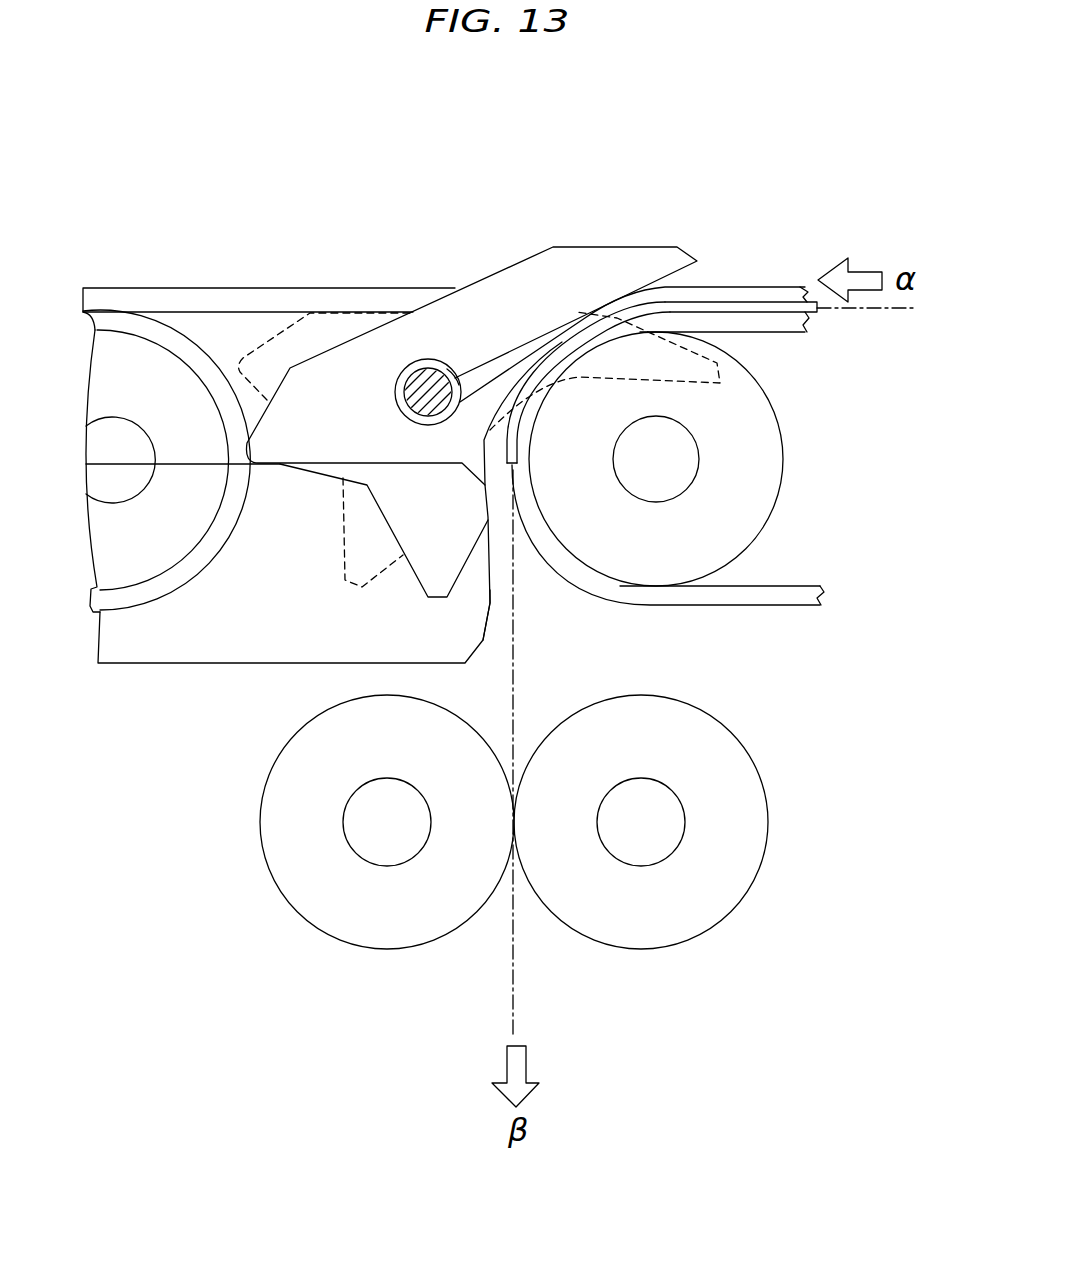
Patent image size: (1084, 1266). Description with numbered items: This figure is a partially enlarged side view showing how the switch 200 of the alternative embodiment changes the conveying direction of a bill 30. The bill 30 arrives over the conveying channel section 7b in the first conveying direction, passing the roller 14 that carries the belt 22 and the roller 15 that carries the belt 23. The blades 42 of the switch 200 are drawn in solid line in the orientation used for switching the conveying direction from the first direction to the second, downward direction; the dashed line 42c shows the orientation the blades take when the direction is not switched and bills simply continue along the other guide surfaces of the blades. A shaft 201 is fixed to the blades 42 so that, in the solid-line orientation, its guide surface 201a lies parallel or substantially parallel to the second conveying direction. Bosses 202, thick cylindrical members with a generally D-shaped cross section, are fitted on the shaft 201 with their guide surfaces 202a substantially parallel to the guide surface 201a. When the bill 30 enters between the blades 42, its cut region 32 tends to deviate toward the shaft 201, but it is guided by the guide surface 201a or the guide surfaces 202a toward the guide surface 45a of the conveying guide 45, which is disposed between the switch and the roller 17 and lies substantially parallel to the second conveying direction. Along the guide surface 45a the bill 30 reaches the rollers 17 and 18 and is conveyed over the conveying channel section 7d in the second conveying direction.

The roller 14 is at (122, 345).
The belt 22 is at (182, 343).
The conveying guide 45 is at (155, 657).
The guide surface 45a is at (493, 603).
The dashed-line orientation of the blades 42c is at (343, 555).
The switch 200 is at (523, 319).
The blades 42 is at (657, 247).
The bosses 202 is at (407, 423).
The guide surface 202a is at (478, 358).
The shaft 201 is at (413, 363).
The guide surface 201a is at (467, 365).
The region 32 is at (512, 352).
The bill 30 is at (770, 302).
The conveying channel section 7b is at (907, 309).
The roller 15 is at (733, 550).
The belt 23 is at (703, 602).
The conveying channel section 7d is at (518, 1010).
The roller 17 is at (379, 939).
The roller 18 is at (642, 939).